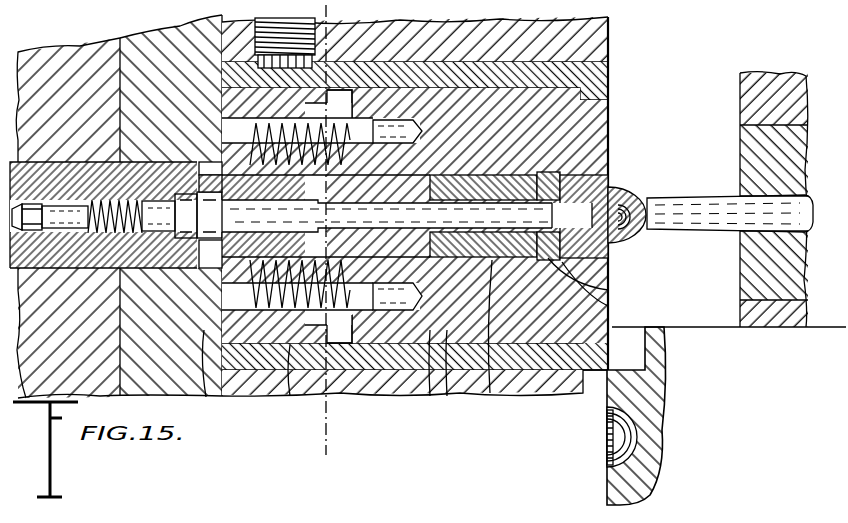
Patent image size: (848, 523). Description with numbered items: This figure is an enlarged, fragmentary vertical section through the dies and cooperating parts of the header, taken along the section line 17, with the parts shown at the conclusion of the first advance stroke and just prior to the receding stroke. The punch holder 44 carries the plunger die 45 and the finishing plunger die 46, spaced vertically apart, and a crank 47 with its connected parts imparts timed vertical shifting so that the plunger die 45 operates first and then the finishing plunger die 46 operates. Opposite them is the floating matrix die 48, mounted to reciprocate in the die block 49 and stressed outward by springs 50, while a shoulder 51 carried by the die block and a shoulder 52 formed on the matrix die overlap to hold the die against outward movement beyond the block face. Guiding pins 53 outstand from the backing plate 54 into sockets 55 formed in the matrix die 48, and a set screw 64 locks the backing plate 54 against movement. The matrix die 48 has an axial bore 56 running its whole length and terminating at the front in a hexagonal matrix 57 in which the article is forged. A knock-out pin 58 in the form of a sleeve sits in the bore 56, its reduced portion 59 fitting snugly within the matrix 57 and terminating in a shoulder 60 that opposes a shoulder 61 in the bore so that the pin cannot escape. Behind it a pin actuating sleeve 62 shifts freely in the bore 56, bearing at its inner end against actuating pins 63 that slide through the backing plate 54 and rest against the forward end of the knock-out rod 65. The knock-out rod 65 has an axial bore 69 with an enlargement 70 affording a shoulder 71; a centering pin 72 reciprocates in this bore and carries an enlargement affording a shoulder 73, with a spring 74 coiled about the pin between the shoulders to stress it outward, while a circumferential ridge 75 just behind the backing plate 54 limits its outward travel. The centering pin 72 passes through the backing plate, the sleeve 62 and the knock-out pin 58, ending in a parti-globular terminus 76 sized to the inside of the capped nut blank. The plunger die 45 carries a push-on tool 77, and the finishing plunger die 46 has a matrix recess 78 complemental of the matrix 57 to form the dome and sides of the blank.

The section line 17 is at (330, 16).
The punch holder 44 is at (774, 184).
The plunger die 45 is at (770, 216).
The finishing plunger die 46 is at (607, 503).
The crank 47 is at (84, 55).
The matrix die 48 is at (608, 290).
The die block 49 is at (602, 33).
The springs 50 is at (322, 216).
The shoulder 51 is at (600, 88).
The shoulder 52 is at (565, 393).
The guiding pins 53 is at (168, 30).
The backing plate 54 is at (290, 396).
The sockets 55 is at (400, 118).
The axial bore 56 is at (608, 306).
The matrix 57 is at (610, 170).
The knock-out pin 58 is at (490, 393).
The reduced portion 59 is at (614, 242).
The shoulder 60 is at (612, 264).
The shoulder 61 is at (604, 148).
The pin actuating sleeve 62 is at (430, 396).
The actuating pins 63 is at (200, 162).
The set screw 64 is at (258, 36).
The knock-out rod 65 is at (38, 233).
The axial bore 69 is at (56, 262).
The enlargement 70 is at (58, 396).
The shoulder 71 is at (95, 233).
The centering pin 72 is at (206, 397).
The shoulder 73 is at (162, 232).
The spring 74 is at (82, 175).
The circumferential ridge 75 is at (200, 230).
The parti-globular terminus 76 is at (628, 193).
The push-on tool 77 is at (695, 206).
The matrix recess 78 is at (606, 462).